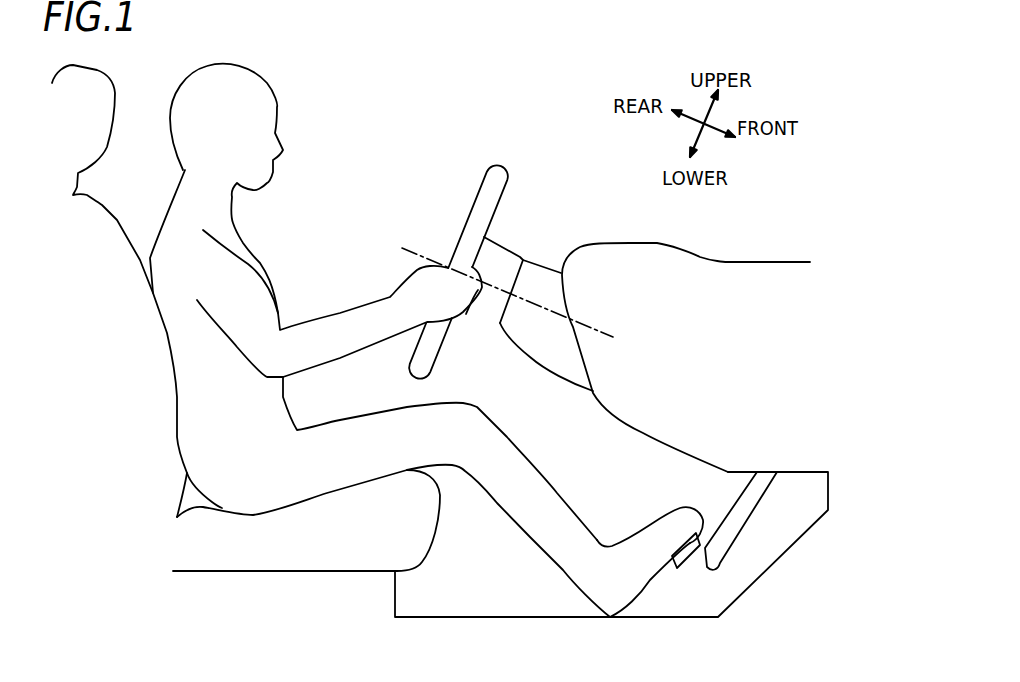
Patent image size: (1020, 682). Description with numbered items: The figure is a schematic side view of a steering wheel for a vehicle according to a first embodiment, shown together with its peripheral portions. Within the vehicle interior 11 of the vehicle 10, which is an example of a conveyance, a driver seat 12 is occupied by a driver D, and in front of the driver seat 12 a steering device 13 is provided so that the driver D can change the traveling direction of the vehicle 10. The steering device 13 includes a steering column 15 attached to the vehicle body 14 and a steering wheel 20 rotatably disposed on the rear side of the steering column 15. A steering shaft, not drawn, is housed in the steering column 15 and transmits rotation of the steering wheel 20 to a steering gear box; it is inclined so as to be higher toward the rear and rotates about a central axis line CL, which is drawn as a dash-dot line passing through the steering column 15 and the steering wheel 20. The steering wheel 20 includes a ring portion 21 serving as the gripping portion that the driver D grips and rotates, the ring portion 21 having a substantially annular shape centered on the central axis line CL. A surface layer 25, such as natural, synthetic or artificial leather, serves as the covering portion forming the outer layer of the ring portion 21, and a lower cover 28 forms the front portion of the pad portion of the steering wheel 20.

The vehicle 10 is at (798, 152).
The vehicle interior 11 is at (505, 618).
The driver seat 12 is at (108, 211).
The steering device 13 is at (540, 202).
The vehicle body 14 is at (775, 262).
The steering column 15 is at (558, 372).
The steering wheel 20 is at (433, 274).
The ring portion 21 is at (479, 190).
The surface layer 25 is at (411, 364).
The lower cover 28 is at (477, 326).
The driver D is at (256, 254).
The central axis line CL is at (593, 328).